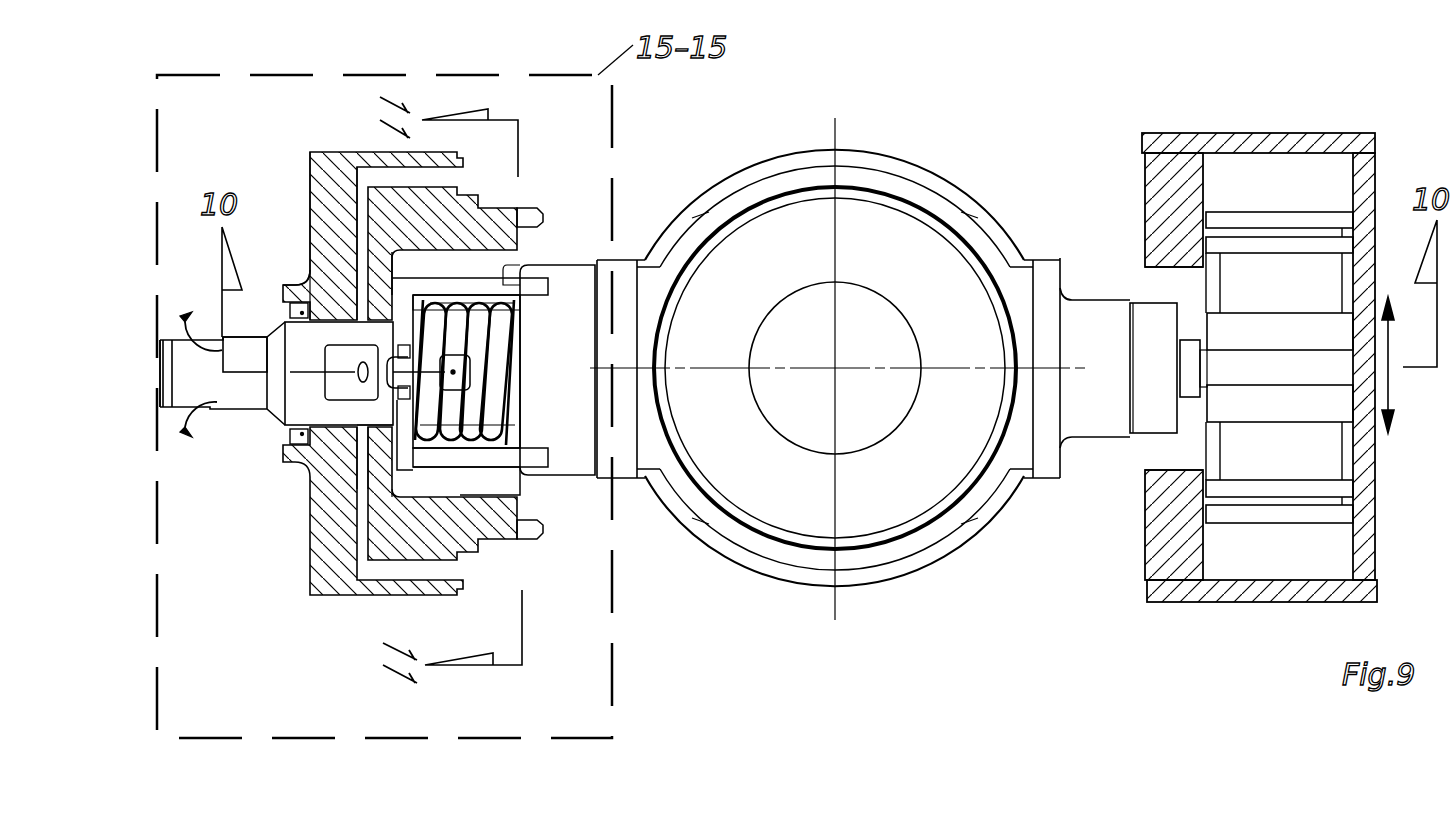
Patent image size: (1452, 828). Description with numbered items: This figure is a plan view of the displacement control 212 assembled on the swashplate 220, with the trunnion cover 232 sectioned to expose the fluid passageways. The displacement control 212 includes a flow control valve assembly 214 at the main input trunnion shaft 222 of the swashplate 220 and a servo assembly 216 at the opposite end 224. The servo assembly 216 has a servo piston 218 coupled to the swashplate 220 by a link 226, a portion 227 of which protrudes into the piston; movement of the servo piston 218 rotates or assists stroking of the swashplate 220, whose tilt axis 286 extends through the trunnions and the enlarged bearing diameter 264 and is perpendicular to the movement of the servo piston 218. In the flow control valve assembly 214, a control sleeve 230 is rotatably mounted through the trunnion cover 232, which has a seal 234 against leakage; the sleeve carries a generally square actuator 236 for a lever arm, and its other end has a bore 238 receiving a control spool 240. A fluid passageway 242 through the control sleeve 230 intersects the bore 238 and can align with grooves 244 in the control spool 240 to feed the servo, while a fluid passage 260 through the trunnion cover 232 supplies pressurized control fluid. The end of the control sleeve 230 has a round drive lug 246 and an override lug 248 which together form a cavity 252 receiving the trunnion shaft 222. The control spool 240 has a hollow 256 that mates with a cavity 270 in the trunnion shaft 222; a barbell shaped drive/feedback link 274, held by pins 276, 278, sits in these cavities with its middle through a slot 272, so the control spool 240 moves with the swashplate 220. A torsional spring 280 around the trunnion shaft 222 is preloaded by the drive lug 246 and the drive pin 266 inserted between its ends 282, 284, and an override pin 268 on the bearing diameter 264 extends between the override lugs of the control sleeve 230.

The displacement control 212 is at (1148, 736).
The flow control valve assembly 214 is at (250, 174).
The servo assembly 216 is at (1152, 600).
The servo piston 218 is at (1297, 524).
The swashplate 220 is at (908, 577).
The main input trunnion shaft 222 is at (512, 400).
The opposite end 224 is at (1152, 303).
The link 226 is at (1197, 398).
The portion of the link 227 is at (1208, 353).
The control sleeve 230 is at (275, 323).
The trunnion cover 232 is at (316, 524).
The seal 234 is at (288, 444).
The trunnion control shaft or actuator 236 is at (168, 412).
The cavity or bore 238 is at (312, 366).
The control spool 240 is at (325, 357).
The fluid passageway 242 is at (368, 275).
The grooves or holes 244 is at (285, 400).
The drive lug 246 is at (470, 478).
The override lug 248 is at (491, 275).
The cavity 252 is at (520, 305).
The hollow 256 is at (370, 232).
The fluid passage 260 is at (362, 358).
The enlarged bearing diameter 264 is at (580, 268).
The drive pin 266 is at (533, 468).
The override pin 268 is at (528, 278).
The cavity 270 is at (505, 380).
The slot 272 is at (357, 497).
The drive/feedback link 274 is at (402, 333).
The pin 276 is at (517, 340).
The pin 278 is at (383, 440).
The torsional spring 280 is at (492, 360).
The spring end 282 is at (500, 487).
The spring end 284 is at (398, 478).
The tilt axis 286 is at (980, 365).